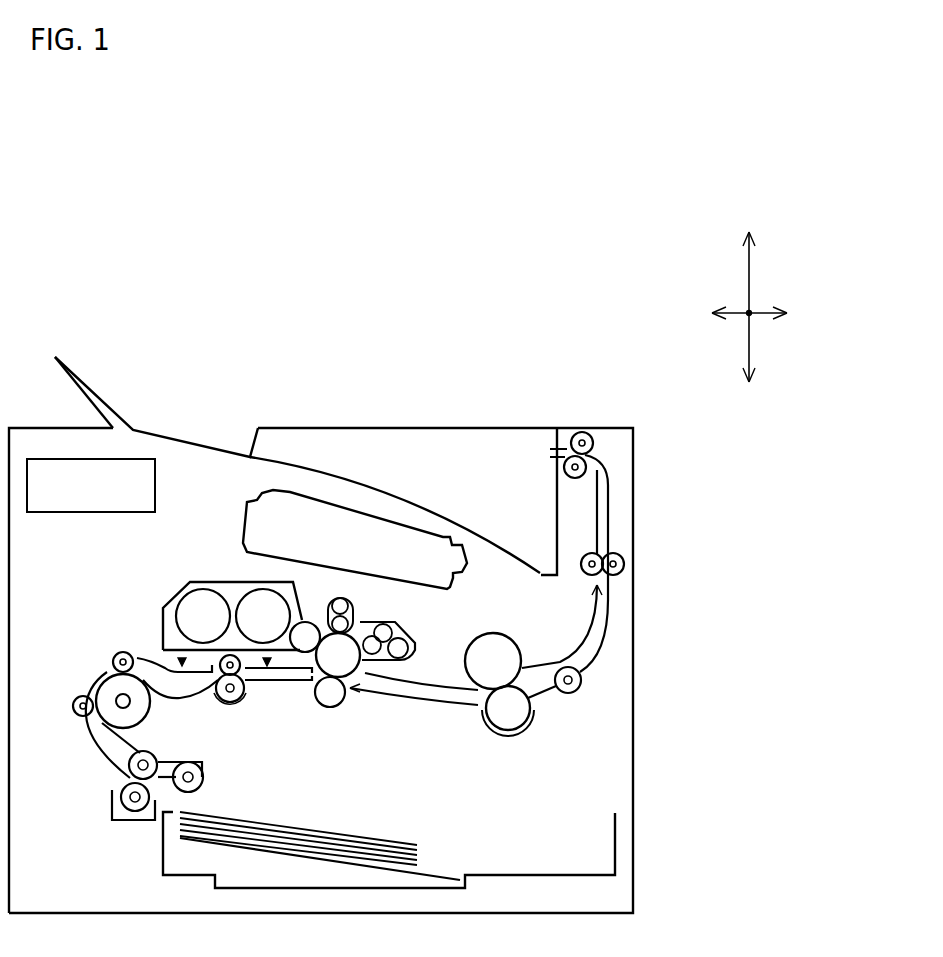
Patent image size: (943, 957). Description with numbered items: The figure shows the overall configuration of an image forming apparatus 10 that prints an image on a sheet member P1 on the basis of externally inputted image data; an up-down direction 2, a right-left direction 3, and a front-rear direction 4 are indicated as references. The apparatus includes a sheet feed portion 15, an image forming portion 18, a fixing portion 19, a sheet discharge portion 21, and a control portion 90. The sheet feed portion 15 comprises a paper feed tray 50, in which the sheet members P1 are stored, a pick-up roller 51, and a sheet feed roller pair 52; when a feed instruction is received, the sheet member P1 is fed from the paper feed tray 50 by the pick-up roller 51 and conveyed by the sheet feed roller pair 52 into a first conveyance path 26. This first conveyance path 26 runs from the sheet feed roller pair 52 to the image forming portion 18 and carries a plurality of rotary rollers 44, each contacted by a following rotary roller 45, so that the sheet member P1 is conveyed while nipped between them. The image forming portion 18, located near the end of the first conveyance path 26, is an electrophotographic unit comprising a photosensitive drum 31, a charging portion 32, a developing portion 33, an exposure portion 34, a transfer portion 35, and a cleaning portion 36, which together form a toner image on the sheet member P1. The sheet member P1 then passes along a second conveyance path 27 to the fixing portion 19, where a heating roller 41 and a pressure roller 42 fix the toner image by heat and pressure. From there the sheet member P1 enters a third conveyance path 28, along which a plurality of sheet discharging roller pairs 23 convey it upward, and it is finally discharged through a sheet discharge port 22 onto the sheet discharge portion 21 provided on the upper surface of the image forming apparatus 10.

The up-down direction 2 is at (745, 268).
The right-left direction 3 is at (740, 310).
The front-rear direction 4 is at (752, 306).
The image forming apparatus 10 is at (626, 402).
The sheet feed portion 15 is at (110, 880).
The image forming portion 18 is at (312, 708).
The fixing portion 19 is at (477, 762).
The sheet discharge portion 21 is at (362, 485).
The sheet discharge port 22 is at (548, 449).
The sheet discharging roller pairs 23 is at (590, 465).
The first conveyance path 26 is at (90, 670).
The second conveyance path 27 is at (412, 707).
The third conveyance path 28 is at (604, 632).
The photosensitive drum 31 is at (355, 676).
The charging portion 32 is at (348, 600).
The developing portion 33 is at (225, 582).
The exposure portion 34 is at (243, 520).
The transfer portion 35 is at (329, 708).
The cleaning portion 36 is at (408, 632).
The heating roller 41 is at (505, 636).
The pressure roller 42 is at (510, 732).
The rotary rollers 44 is at (143, 720).
The rotary rollers 45 is at (122, 652).
The paper feed tray 50 is at (162, 852).
The pick-up roller 51 is at (200, 785).
The sheet feed roller pair 52 is at (138, 770).
The control portion 90 is at (55, 513).
The sheet member P1 is at (345, 832).